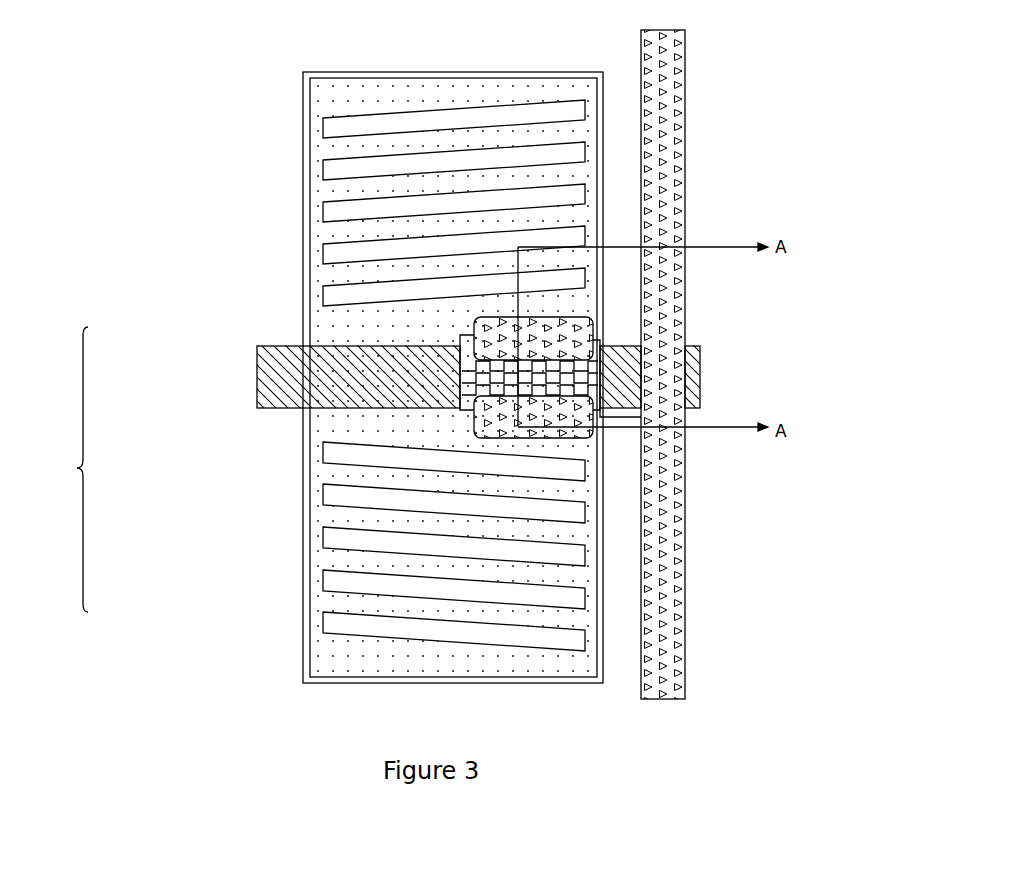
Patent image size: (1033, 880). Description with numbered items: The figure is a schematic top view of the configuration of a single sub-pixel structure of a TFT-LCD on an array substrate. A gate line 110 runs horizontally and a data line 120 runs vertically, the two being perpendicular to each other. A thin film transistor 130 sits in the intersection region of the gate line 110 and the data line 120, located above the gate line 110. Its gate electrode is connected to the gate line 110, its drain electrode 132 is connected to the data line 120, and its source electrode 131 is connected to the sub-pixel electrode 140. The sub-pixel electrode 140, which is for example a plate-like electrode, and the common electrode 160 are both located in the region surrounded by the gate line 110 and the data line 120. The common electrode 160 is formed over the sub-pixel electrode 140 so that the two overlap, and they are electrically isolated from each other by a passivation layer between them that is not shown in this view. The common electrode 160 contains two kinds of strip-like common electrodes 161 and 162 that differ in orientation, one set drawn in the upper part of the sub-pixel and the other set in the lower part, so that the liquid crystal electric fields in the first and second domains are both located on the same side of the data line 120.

The gate line 110 is at (280, 390).
The data line 120 is at (667, 618).
The thin film transistor 130 is at (555, 377).
The source electrode 131 is at (560, 333).
The drain electrode 132 is at (583, 428).
The sub-pixel electrode 140 is at (335, 102).
The common electrode 160 is at (61, 469).
The strip-like common electrode 161 is at (333, 130).
The strip-like common electrode 162 is at (335, 450).